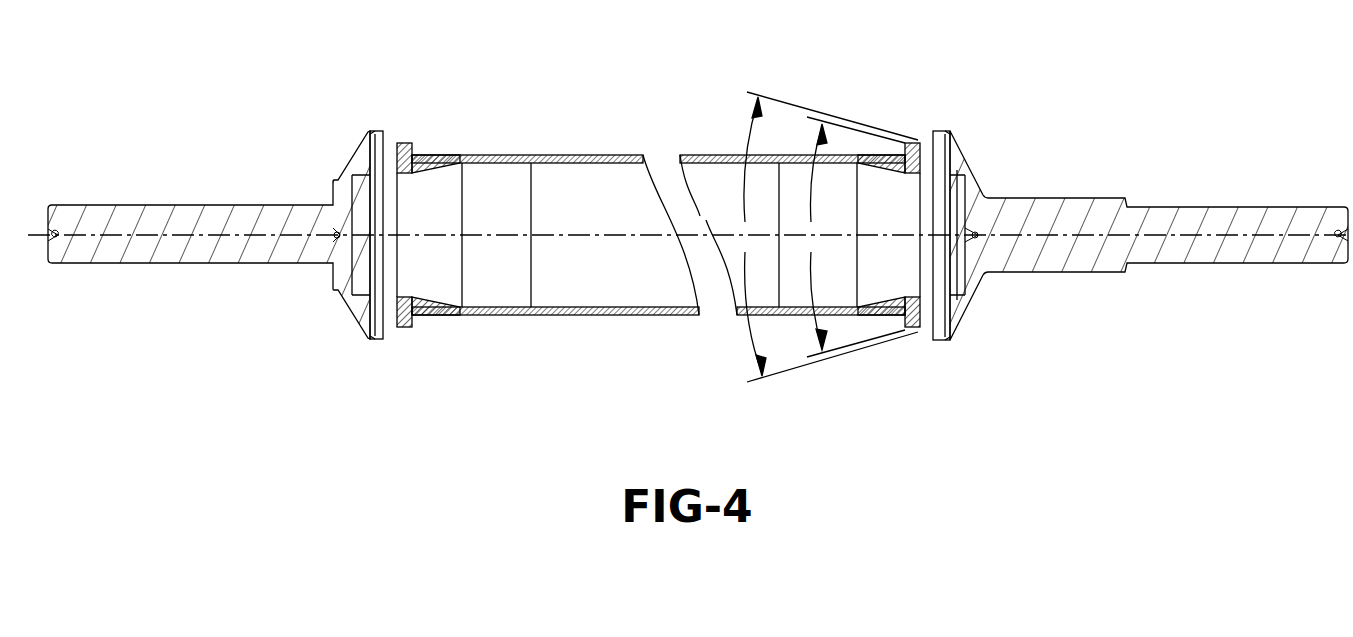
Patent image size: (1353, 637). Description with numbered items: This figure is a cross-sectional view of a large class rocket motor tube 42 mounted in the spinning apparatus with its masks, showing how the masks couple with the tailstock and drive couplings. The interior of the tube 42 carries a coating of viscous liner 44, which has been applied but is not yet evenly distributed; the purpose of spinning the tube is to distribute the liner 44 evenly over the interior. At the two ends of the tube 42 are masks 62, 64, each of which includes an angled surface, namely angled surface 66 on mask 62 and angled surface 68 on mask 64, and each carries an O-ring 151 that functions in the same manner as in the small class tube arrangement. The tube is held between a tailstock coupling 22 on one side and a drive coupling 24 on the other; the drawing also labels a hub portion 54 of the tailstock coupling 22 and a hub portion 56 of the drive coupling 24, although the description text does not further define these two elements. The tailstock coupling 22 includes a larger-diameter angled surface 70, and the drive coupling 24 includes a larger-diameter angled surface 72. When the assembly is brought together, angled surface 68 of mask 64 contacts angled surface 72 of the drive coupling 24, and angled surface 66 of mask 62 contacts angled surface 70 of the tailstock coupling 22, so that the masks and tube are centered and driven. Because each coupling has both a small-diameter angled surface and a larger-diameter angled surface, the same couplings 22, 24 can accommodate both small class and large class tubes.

The tailstock coupling 22 is at (165, 264).
The drive coupling 24 is at (1195, 207).
The large class rocket motor tube 42 is at (560, 156).
The viscous liner 44 is at (600, 156).
The first hub 54 is at (358, 168).
The second hub 56 is at (960, 170).
The mask 62 is at (445, 156).
The mask 64 is at (887, 158).
The angled surface 66 is at (403, 143).
The angled surface 68 is at (910, 143).
The angled surface 70 is at (373, 133).
The angled surface 72 is at (953, 133).
The O-rings 151 is at (463, 156).